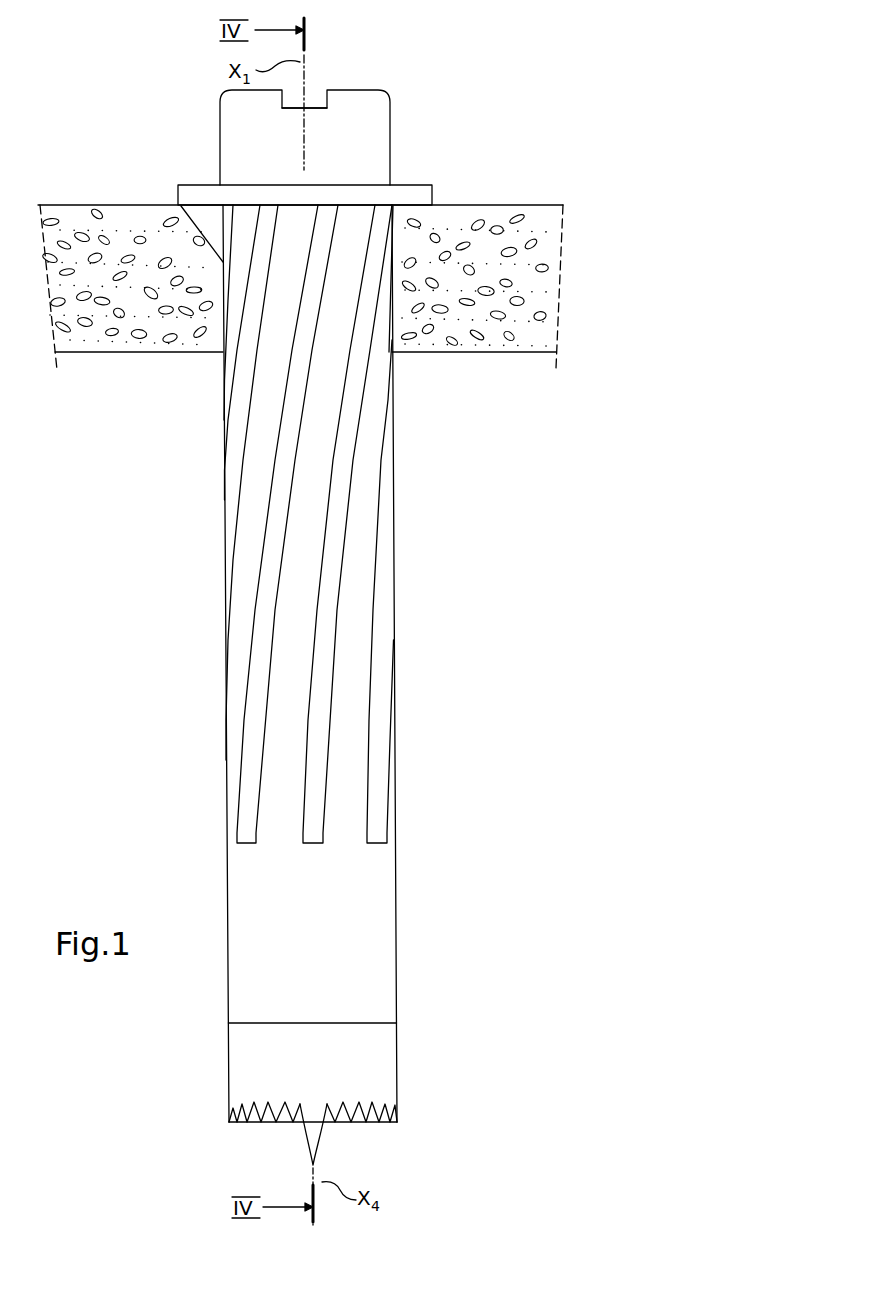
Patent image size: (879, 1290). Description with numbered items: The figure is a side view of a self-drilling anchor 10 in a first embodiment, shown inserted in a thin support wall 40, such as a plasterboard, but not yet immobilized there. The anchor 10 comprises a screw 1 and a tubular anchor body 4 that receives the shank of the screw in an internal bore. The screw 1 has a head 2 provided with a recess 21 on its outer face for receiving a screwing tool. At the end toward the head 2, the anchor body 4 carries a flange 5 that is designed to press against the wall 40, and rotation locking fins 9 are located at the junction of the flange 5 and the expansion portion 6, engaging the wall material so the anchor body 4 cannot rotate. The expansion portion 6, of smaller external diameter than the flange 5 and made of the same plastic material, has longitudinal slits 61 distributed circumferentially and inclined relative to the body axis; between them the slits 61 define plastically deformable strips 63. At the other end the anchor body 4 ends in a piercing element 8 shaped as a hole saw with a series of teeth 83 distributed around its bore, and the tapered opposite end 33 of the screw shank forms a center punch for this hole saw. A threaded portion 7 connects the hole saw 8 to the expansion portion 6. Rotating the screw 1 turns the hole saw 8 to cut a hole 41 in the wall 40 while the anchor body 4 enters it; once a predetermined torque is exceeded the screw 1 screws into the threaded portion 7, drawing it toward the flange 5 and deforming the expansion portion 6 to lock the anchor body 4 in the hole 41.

The screw 1 is at (168, 114).
The anchor 10 is at (497, 103).
The head 2 is at (376, 128).
The recess 21 is at (316, 88).
The flange 5 is at (414, 192).
The rotation locking fins 9 is at (190, 216).
The anchor body 4 is at (150, 640).
The wall 40 is at (517, 353).
The hole 41 is at (395, 358).
The expansion portion 6 is at (393, 755).
The longitudinal slits 61 is at (348, 553).
The strips 63 is at (298, 500).
The threaded portion 7 is at (390, 990).
The piercing element 8 is at (392, 1072).
The teeth 83 is at (270, 1122).
The opposite end 33 is at (316, 1132).